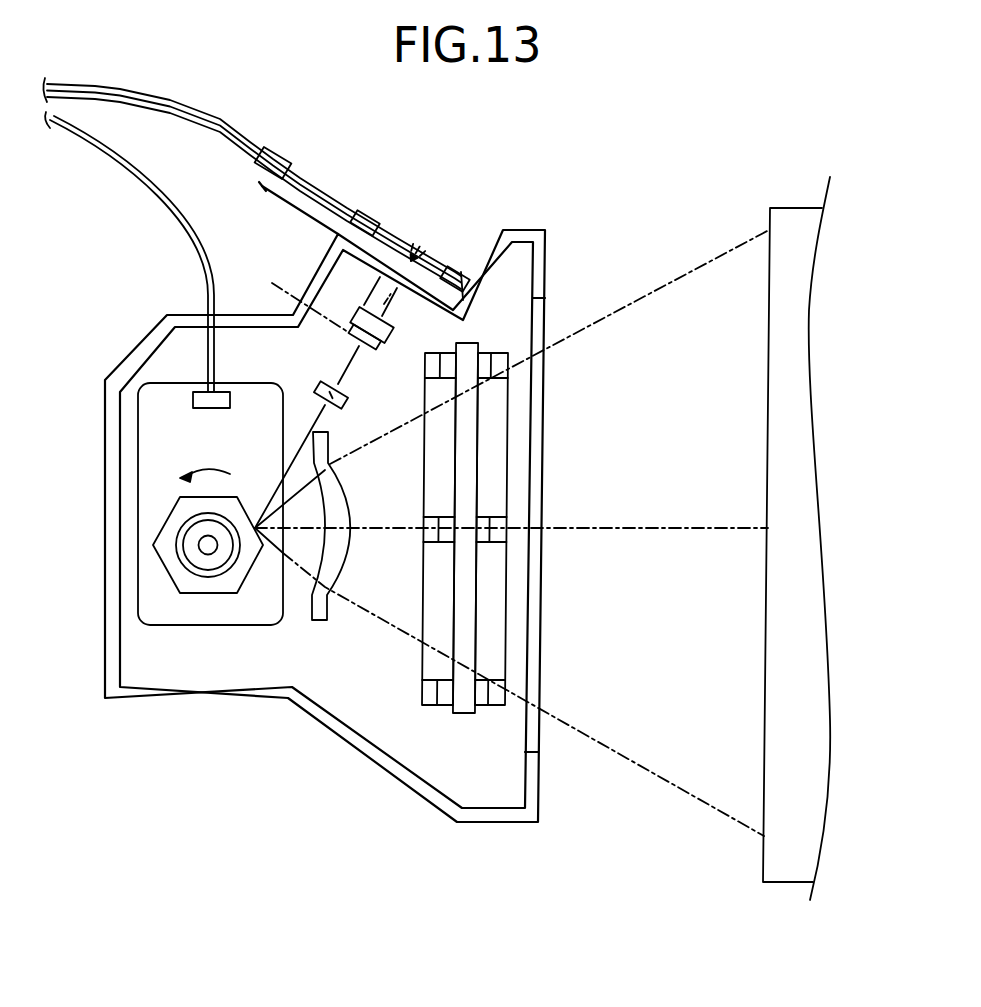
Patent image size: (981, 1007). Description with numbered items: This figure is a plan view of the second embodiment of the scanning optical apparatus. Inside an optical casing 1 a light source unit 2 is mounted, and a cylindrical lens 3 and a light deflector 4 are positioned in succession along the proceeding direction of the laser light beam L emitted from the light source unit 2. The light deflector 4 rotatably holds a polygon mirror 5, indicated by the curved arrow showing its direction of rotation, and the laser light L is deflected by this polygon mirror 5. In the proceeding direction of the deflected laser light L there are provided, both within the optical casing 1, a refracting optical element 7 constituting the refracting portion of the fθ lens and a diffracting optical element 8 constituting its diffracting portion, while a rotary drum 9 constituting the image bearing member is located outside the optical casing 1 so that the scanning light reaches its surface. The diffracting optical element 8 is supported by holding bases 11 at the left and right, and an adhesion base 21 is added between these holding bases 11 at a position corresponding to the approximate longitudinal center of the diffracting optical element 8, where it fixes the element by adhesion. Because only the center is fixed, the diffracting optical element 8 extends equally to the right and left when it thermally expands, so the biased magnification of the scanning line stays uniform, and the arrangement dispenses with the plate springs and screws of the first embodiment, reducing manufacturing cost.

The optical casing 1 is at (521, 230).
The light source unit 2 is at (352, 352).
The mirror 3 is at (320, 384).
The light deflector 4 is at (139, 428).
The polygon mirror 5 is at (166, 572).
The refracting optical element 7 is at (318, 624).
The diffracting optical element 8 is at (470, 341).
The rotary drum 9 is at (787, 884).
The holding bases 11 is at (432, 368).
The adhesion base 21 is at (432, 530).
The laser light beam L is at (272, 283).